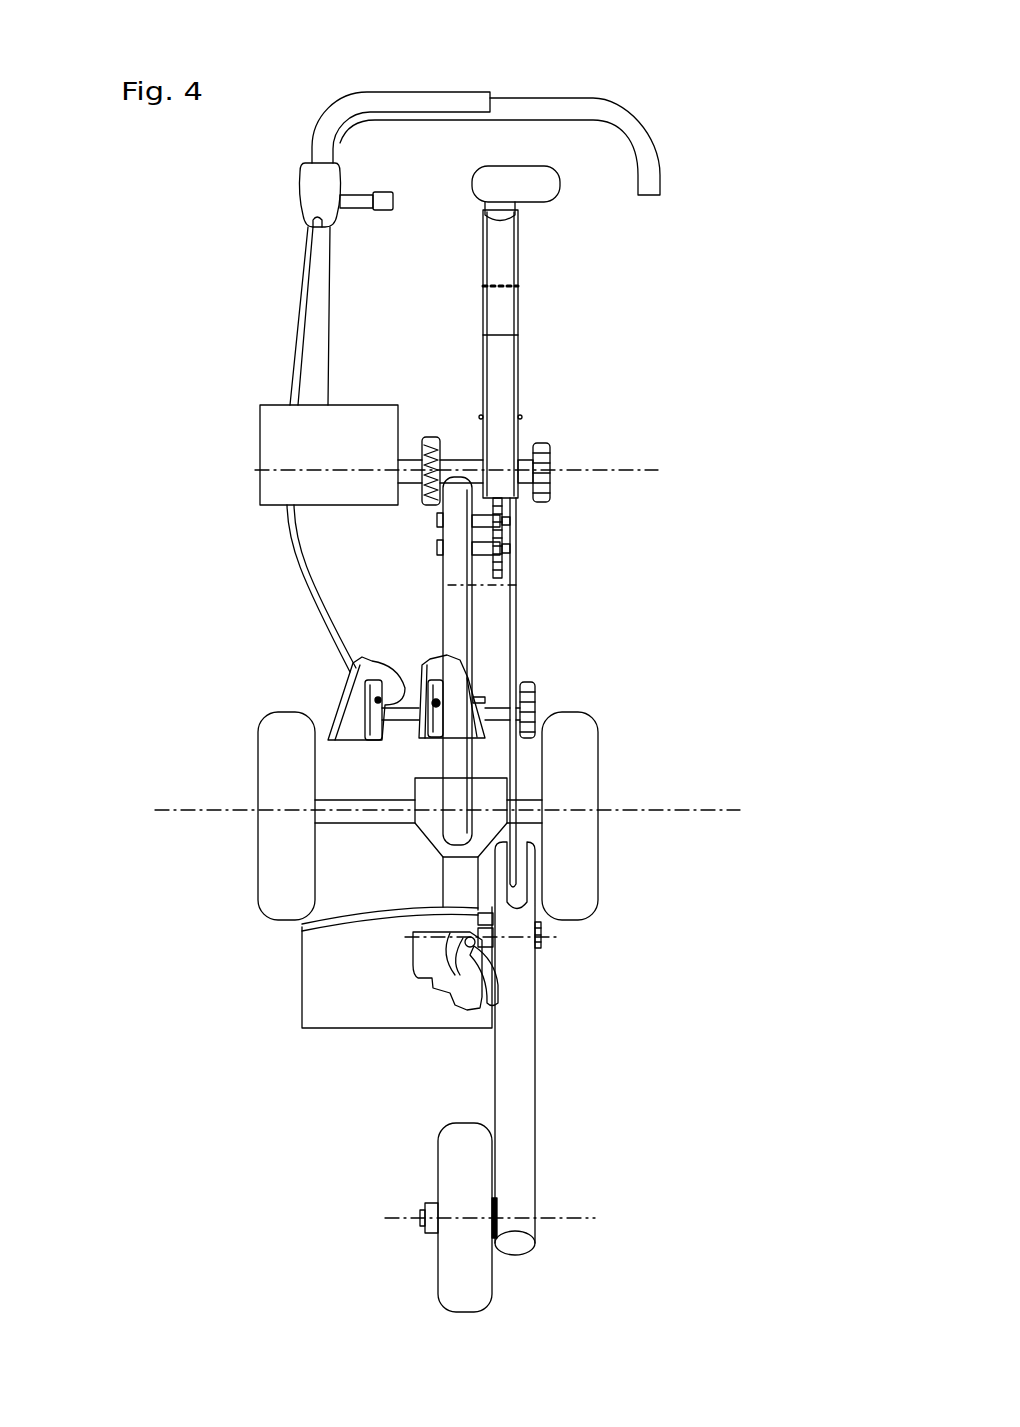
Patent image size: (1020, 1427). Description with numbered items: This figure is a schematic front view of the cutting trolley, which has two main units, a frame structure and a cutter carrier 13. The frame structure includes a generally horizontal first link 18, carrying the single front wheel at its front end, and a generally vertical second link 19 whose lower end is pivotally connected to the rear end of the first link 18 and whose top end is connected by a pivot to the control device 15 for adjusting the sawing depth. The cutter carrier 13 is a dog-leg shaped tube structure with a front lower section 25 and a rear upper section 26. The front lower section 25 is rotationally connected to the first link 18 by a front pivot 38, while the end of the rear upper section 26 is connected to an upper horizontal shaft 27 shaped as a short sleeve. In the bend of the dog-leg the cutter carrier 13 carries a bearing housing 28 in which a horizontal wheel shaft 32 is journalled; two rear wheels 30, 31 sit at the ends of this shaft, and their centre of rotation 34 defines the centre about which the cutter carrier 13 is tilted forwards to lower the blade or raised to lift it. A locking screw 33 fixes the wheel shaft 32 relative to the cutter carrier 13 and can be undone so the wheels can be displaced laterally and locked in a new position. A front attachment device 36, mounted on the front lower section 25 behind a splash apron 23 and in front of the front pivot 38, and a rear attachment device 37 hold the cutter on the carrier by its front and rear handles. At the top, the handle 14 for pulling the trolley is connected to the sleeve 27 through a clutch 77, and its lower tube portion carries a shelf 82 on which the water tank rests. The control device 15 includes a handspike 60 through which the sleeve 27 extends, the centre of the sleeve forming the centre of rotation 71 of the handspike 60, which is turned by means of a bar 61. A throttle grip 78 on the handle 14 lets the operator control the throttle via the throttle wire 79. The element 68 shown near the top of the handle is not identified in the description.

The handle 14 is at (580, 105).
The handlebar cap 68 is at (540, 195).
The throttle grip 78 is at (390, 210).
The bar 61 is at (520, 250).
The handspike 60 is at (500, 313).
The control device 15 is at (466, 285).
The clutch 77 is at (440, 437).
The centre of rotation 71 is at (597, 470).
The shelf 82 is at (258, 497).
The throttle wire 79 is at (297, 565).
The cutter carrier 13 is at (400, 581).
The rear upper section 26 is at (480, 597).
The upper horizontal shaft 27 is at (500, 565).
The second link 19 is at (513, 632).
The rear attachment device 37 is at (422, 660).
The locking screw 33 is at (490, 777).
The rear wheel 31 is at (265, 875).
The rear wheel 30 is at (575, 745).
The wheel shaft 32 is at (328, 800).
The bearing housing 28 is at (422, 795).
The front lower section 25 is at (453, 887).
The first link 18 is at (513, 1048).
The front pivot 38 is at (545, 952).
The splash apron 23 is at (318, 987).
The front attachment device 36 is at (462, 1010).
The centre of rotation 34 is at (676, 808).